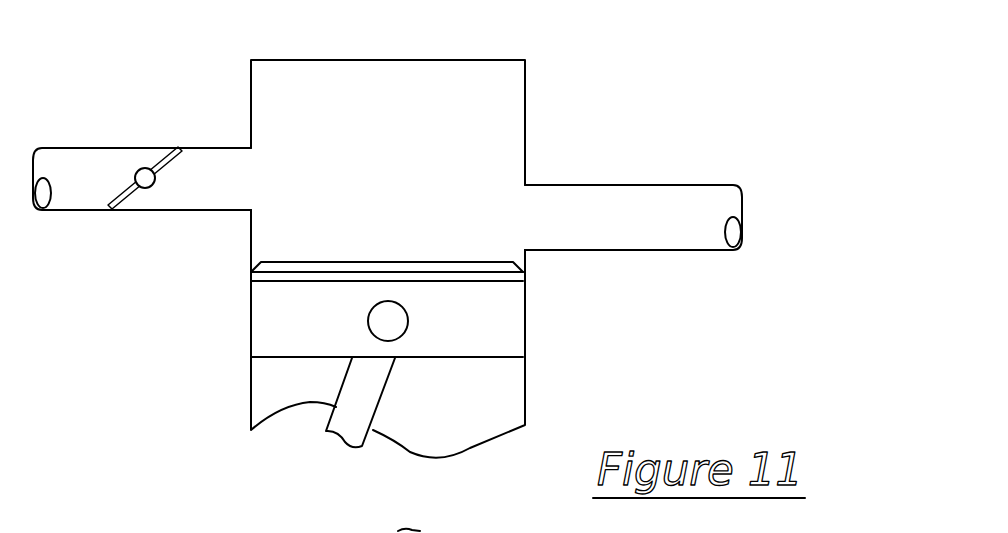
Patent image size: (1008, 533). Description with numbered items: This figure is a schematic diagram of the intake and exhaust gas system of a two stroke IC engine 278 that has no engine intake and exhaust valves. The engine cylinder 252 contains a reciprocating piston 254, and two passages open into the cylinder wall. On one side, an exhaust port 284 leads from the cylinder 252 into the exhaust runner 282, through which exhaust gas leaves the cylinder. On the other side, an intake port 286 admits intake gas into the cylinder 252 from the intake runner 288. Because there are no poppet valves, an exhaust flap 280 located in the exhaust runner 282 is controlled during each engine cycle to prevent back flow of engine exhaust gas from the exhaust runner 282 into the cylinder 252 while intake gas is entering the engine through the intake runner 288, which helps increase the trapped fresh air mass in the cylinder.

The two stroke IC engine 278 is at (578, 56).
The exhaust runner 282 is at (82, 147).
The exhaust flap 280 is at (166, 162).
The exhaust port 284 is at (250, 214).
The intake runner 288 is at (680, 185).
The intake port 286 is at (527, 251).
The piston 254 is at (251, 320).
The cylinder 252 is at (251, 392).